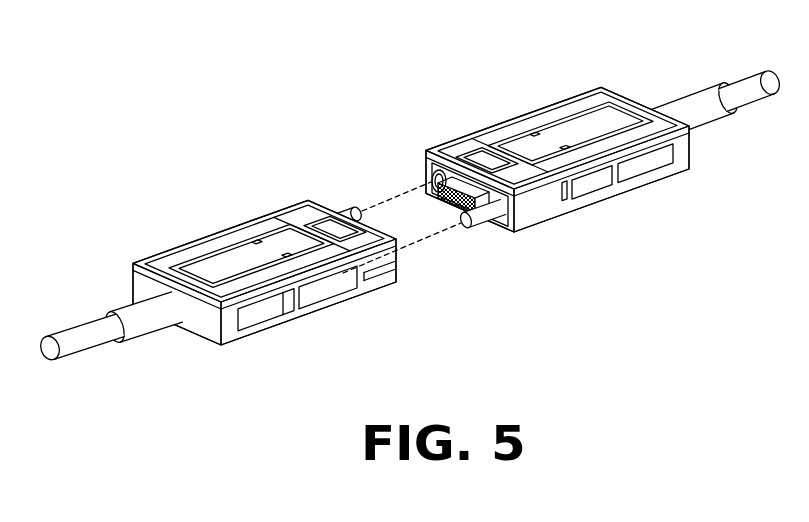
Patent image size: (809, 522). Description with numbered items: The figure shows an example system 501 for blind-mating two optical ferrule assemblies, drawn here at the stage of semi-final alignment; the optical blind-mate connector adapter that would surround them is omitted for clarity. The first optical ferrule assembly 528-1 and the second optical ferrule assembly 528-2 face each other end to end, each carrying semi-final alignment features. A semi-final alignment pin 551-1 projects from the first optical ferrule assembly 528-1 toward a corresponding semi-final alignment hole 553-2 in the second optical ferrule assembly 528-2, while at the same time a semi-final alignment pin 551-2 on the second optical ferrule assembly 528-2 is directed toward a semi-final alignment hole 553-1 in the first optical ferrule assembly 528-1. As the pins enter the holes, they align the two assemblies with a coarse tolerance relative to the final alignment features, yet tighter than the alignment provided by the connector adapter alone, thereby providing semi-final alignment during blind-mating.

The system for blind-mating optical ferrule assemblies 501 is at (250, 60).
The first optical ferrule assembly 528-1 is at (197, 231).
The second optical ferrule assembly 528-2 is at (510, 115).
The semi-final alignment pin 551-1 is at (342, 203).
The semi-final alignment pin 551-2 is at (483, 233).
The semi-final alignment hole 553-1 is at (361, 298).
The semi-final alignment hole 553-2 is at (430, 178).